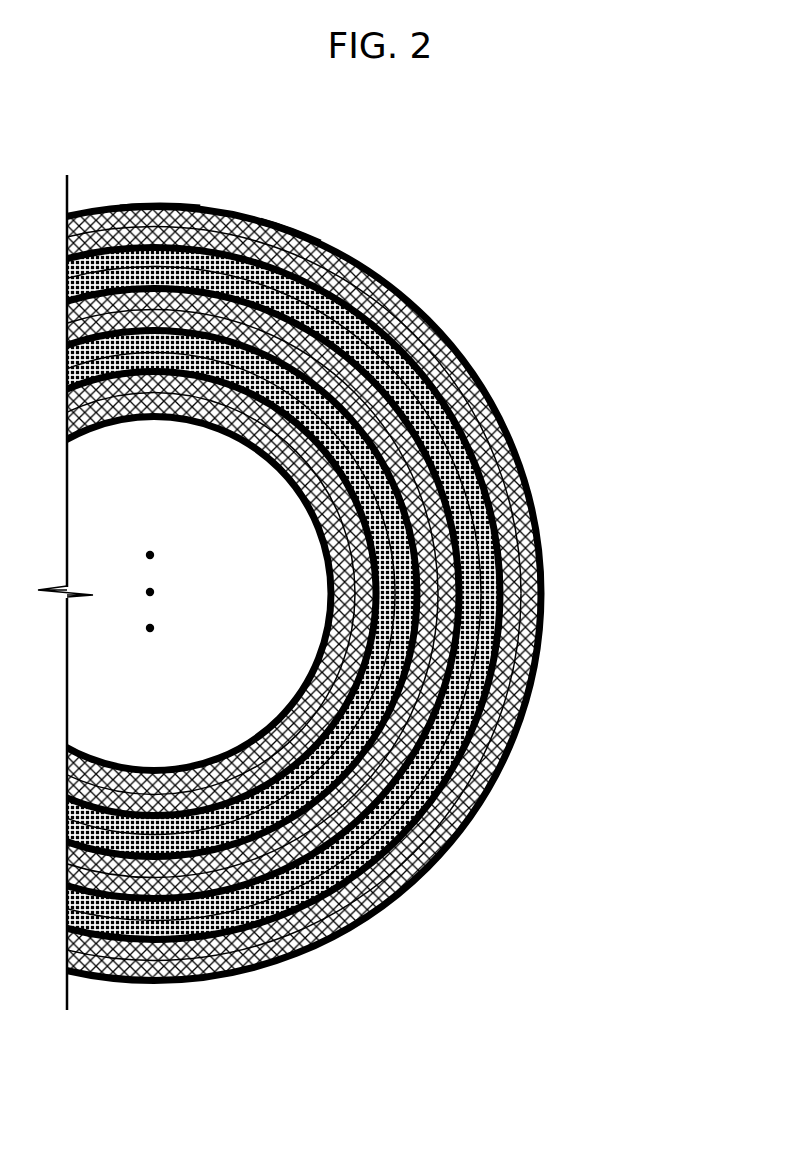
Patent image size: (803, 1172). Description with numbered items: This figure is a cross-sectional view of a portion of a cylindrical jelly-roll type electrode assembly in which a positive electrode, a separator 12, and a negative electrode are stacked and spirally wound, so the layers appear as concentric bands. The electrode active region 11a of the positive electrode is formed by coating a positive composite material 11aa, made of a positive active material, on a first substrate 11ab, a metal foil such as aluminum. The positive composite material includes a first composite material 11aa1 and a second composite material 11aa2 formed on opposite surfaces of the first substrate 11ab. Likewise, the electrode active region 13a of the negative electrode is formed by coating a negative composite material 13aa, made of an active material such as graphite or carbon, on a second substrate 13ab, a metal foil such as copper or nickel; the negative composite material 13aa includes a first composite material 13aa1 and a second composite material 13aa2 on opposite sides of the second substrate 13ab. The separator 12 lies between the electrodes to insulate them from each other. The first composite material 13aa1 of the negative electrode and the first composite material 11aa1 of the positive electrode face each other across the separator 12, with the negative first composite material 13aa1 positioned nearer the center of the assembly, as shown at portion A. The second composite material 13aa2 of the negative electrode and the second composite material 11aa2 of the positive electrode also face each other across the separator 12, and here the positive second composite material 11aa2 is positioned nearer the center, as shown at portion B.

The electrode active region of the positive electrode 11a is at (365, 787).
The positive composite material 11aa is at (340, 787).
The first composite material of the positive electrode 11aa1 is at (536, 619).
The second composite material of the positive electrode 11aa2 is at (536, 659).
The first substrate 11ab is at (532, 690).
The separator 12 is at (390, 900).
The electrode active region of the negative electrode 13a is at (352, 400).
The negative composite material 13aa is at (327, 400).
The first composite material of the negative electrode 13aa1 is at (497, 405).
The second composite material of the negative electrode 13aa2 is at (507, 442).
The second substrate 13ab is at (530, 490).
The portion A is at (291, 228).
The portion B is at (162, 205).